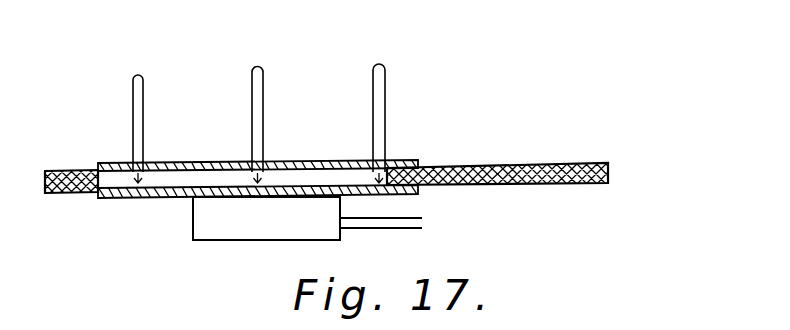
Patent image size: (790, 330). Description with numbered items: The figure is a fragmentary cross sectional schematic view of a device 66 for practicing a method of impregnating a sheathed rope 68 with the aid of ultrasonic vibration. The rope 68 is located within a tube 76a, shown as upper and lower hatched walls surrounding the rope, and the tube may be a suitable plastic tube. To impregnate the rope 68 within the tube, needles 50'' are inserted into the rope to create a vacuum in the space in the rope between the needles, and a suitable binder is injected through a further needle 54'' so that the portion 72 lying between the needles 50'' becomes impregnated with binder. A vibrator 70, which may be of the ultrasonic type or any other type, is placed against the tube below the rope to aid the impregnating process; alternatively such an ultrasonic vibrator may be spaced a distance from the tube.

The needles 50'' is at (250, 112).
The needle 54'' is at (282, 113).
The connector assembly 66 is at (440, 108).
The rope 68 is at (531, 164).
The vibrator 70 is at (228, 240).
The portion 72 is at (314, 178).
The lower clamping plate 76a is at (140, 200).